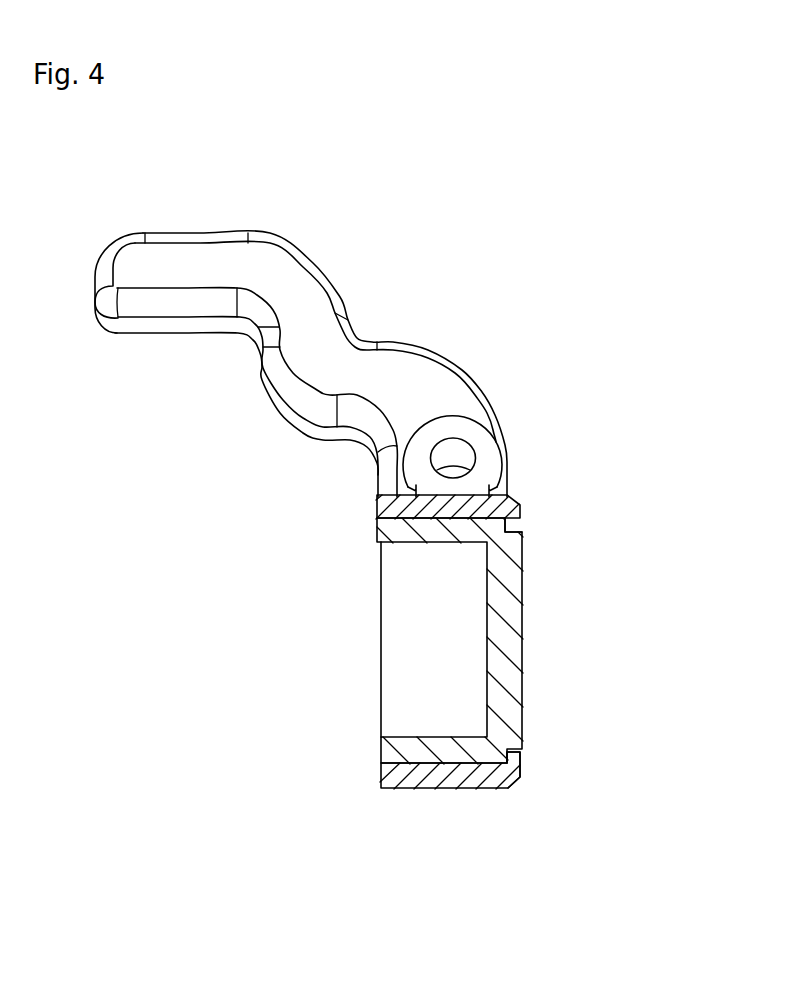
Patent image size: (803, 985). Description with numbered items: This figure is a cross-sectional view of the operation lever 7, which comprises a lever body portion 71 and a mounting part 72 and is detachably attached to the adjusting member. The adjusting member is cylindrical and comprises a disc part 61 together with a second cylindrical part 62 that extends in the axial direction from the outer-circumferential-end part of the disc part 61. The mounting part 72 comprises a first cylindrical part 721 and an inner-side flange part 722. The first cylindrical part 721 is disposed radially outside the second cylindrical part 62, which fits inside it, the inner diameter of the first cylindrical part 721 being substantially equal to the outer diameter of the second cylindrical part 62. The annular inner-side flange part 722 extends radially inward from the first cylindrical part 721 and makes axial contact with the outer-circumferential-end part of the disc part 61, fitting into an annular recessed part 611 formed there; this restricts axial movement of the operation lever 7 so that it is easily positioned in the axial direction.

The operation lever 7 is at (376, 545).
The lever body portion 71 is at (378, 312).
The mounting part 72 is at (513, 498).
The first cylindrical part 721 is at (443, 790).
The inner-side flange part 722 is at (520, 765).
The disc part 61 is at (470, 641).
The recessed part 611 is at (520, 523).
The second cylindrical part 62 is at (417, 533).